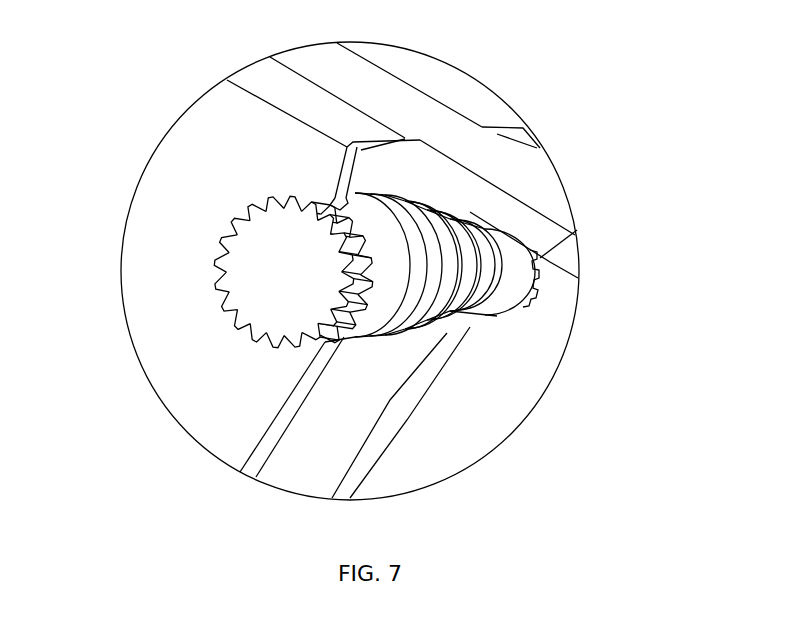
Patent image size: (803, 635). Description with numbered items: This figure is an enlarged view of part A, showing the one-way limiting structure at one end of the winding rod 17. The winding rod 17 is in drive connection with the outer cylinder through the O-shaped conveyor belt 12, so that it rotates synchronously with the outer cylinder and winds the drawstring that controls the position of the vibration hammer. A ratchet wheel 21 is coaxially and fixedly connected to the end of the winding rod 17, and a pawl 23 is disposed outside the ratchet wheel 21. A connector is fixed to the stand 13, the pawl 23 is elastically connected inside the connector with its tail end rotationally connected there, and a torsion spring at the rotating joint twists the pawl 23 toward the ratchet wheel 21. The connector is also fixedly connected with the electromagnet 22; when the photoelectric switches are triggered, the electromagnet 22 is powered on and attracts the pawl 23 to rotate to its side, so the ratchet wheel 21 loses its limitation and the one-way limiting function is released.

The O-shaped conveyor belt 12 is at (409, 373).
The stand 13 is at (429, 139).
The winding rod 17 is at (553, 306).
The ratchet wheels 21 is at (218, 297).
The electromagnet 22 is at (445, 112).
The pawls 23 is at (494, 246).
The part A is at (370, 271).